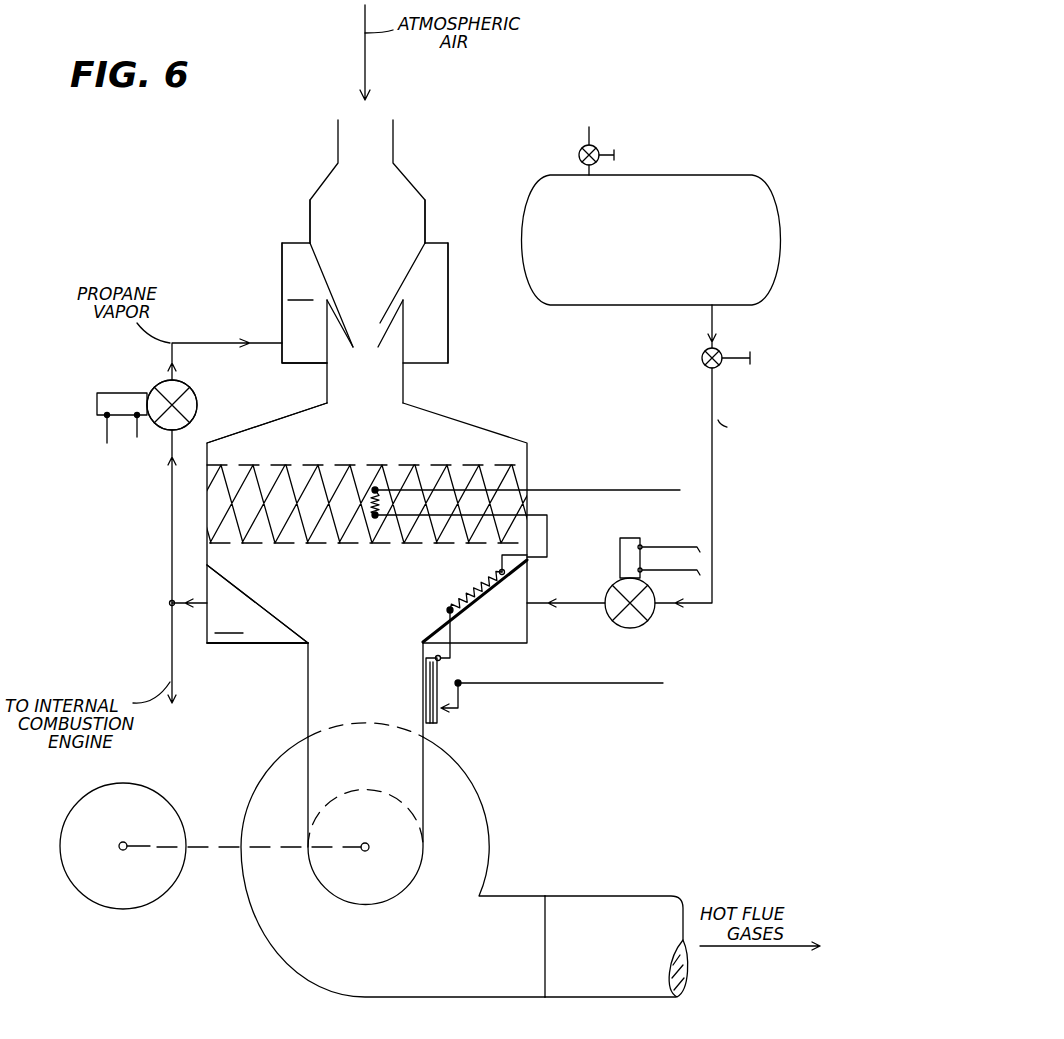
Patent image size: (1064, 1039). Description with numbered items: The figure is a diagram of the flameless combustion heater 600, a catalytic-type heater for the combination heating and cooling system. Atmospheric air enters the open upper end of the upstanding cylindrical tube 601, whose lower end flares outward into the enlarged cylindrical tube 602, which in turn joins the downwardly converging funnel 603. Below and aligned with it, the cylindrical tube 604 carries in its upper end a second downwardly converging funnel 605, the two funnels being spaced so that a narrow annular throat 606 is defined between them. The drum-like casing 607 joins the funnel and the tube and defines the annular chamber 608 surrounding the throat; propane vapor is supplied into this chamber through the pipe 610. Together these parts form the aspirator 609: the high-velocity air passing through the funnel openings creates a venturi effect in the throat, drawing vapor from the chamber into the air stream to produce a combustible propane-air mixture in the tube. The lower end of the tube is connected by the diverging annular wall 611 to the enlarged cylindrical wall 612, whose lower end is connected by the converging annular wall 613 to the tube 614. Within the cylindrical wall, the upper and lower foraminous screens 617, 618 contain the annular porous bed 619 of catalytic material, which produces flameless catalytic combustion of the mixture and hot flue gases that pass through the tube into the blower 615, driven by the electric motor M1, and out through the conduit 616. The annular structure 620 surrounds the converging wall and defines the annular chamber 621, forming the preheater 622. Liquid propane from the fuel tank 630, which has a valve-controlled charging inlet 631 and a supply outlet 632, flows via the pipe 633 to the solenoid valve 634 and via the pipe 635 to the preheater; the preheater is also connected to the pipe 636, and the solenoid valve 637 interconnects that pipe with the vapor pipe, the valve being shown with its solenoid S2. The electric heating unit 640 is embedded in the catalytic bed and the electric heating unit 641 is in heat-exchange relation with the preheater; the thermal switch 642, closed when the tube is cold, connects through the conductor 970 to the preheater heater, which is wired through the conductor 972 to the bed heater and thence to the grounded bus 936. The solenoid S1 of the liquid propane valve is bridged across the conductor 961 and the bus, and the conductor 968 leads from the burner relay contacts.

The flameless combustion heater 600 is at (444, 396).
The upstanding cylindrical tube 601 is at (393, 137).
The enlarged upstanding cylindrical tube 602 is at (425, 215).
The downwardly converging funnel 603 is at (410, 263).
The upstanding cylindrical tube 604 is at (327, 385).
The downwardly converging funnel 605 is at (380, 345).
The annular throat 606 is at (338, 310).
The drum-like casing 607 is at (448, 307).
The annular chamber 608 is at (305, 289).
The aspirator 609 is at (260, 233).
The pipe 610 is at (225, 342).
The downwardly flared diverging annular wall 611 is at (295, 413).
The enlarged upstanding cylindrical wall 612 is at (205, 523).
The downwardly flared converging annular wall 613 is at (262, 602).
The upstanding tube 614 is at (308, 765).
The blower 615 is at (467, 833).
The conduit 616 is at (632, 896).
The upper foraminous screen 617 is at (388, 465).
The lower foraminous screen 618 is at (447, 543).
The porous bed of catalytic material 619 is at (431, 505).
The annular structure 620 is at (267, 643).
The annular chamber 621 is at (232, 623).
The preheater 622 is at (224, 651).
The fuel tank 630 is at (651, 240).
The valve-controlled charging inlet 631 is at (600, 148).
The valve-controlled supply outlet 632 is at (718, 352).
The pipe 633 is at (713, 492).
The solenoid valve 634 is at (659, 633).
The pipe 635 is at (573, 605).
The pipe 636 is at (172, 573).
The solenoid valve 637 is at (146, 432).
The electric heating unit 640 is at (362, 523).
The electric heating unit 641 is at (447, 610).
The thermal switch 642 is at (472, 726).
The grounded bus 936 is at (620, 492).
The conductor 961 is at (560, 683).
The conductor 968 is at (107, 428).
The conductor 970 is at (453, 653).
The conductor 972 is at (548, 530).
The solenoid S1 is at (620, 555).
The solenoid S2 is at (120, 393).
The electric motor M1 is at (140, 904).